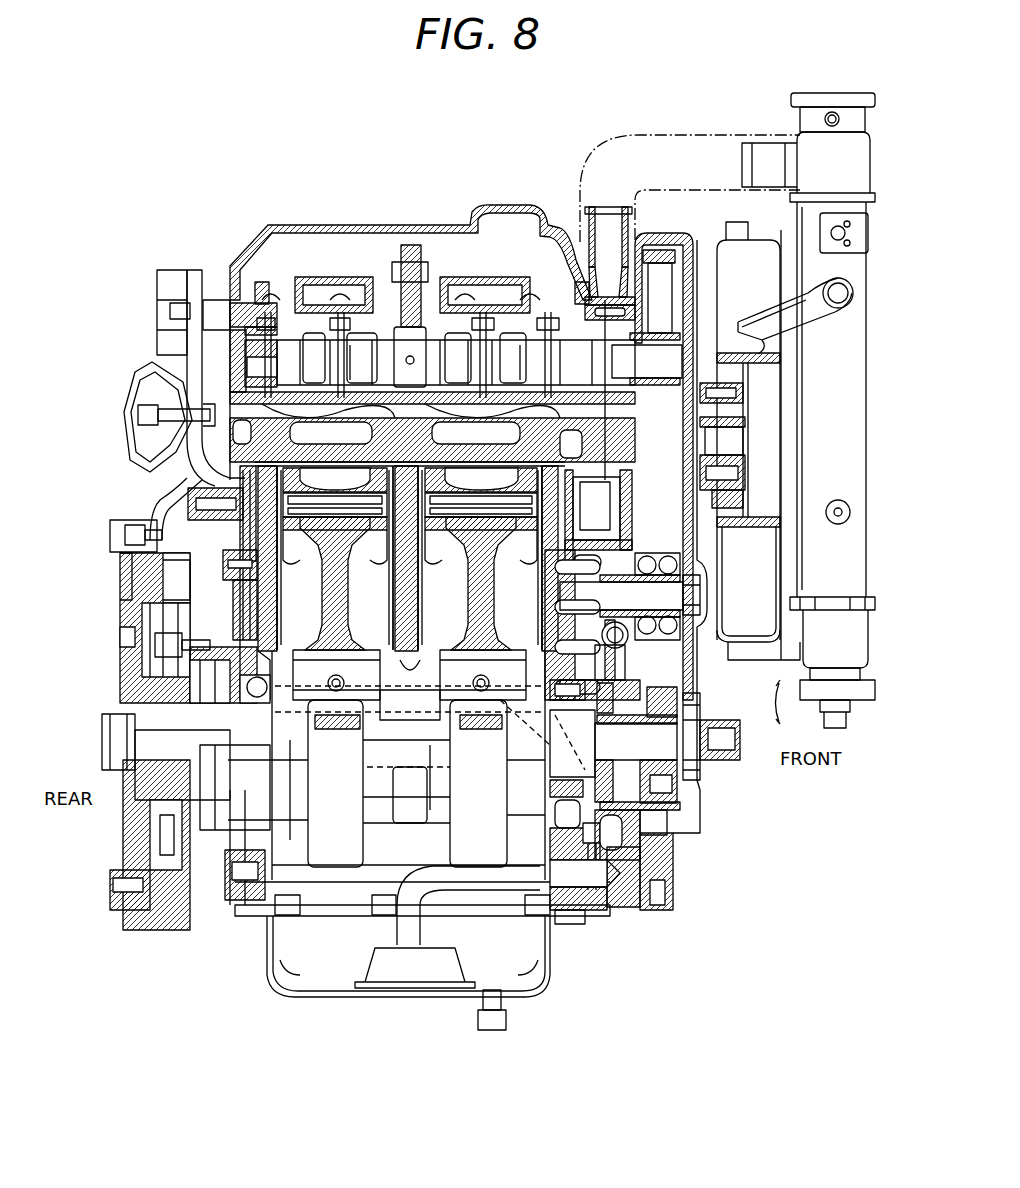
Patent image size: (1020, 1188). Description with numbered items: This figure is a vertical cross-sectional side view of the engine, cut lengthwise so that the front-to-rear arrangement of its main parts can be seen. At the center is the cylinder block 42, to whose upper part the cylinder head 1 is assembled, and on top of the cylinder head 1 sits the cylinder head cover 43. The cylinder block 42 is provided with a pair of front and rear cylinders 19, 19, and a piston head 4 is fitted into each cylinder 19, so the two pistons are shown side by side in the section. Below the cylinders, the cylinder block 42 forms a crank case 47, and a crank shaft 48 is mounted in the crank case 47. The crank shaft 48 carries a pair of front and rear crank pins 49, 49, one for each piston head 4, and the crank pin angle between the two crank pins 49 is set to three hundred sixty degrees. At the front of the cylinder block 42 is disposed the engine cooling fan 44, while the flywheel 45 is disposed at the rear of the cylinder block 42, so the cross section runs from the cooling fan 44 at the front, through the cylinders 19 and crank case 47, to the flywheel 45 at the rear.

The cylinder head 1 is at (236, 322).
The piston head 4 is at (298, 478).
The cylinder 19 is at (386, 592).
The cylinder block 42 is at (235, 896).
The cylinder head cover 43 is at (318, 224).
The engine cooling fan 44 is at (733, 263).
The flywheel 45 is at (127, 926).
The crank case 47 is at (328, 845).
The crank shaft 48 is at (433, 810).
The crank pin 49 is at (332, 675).